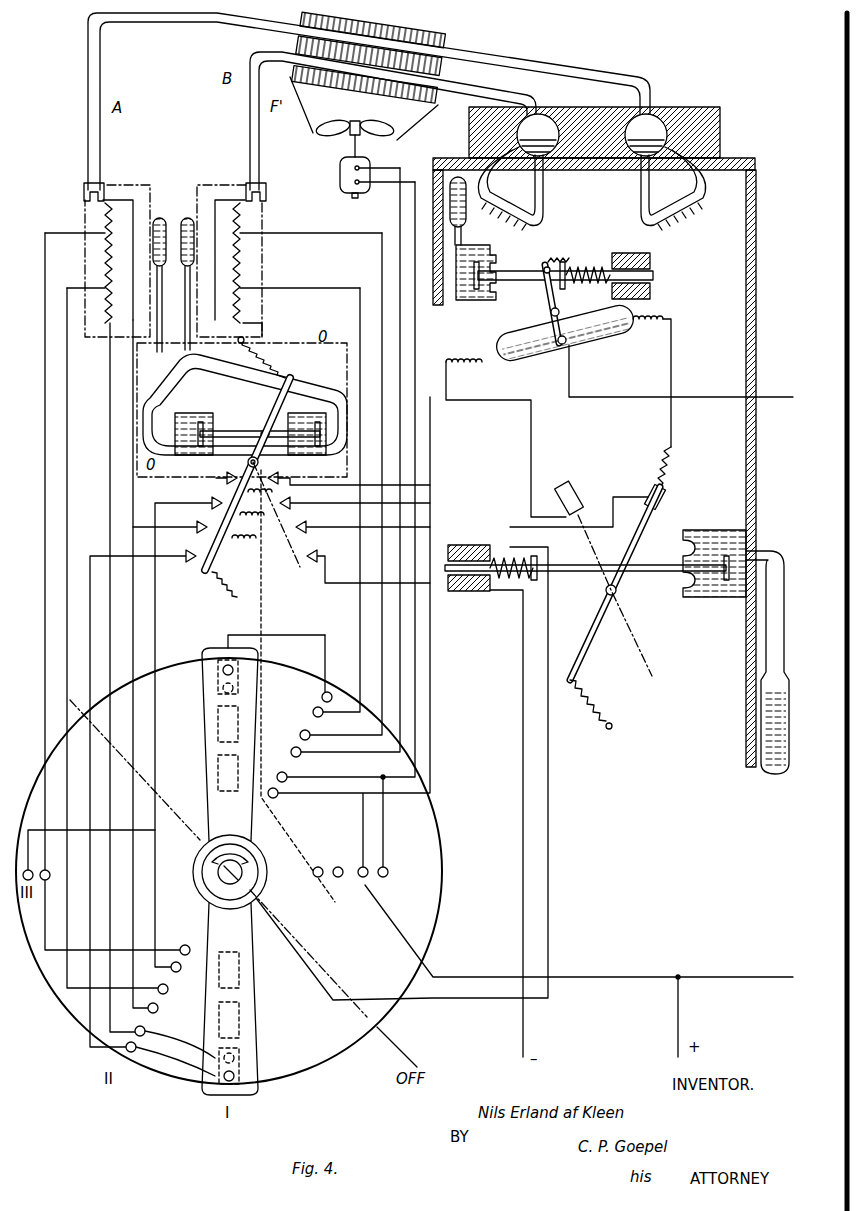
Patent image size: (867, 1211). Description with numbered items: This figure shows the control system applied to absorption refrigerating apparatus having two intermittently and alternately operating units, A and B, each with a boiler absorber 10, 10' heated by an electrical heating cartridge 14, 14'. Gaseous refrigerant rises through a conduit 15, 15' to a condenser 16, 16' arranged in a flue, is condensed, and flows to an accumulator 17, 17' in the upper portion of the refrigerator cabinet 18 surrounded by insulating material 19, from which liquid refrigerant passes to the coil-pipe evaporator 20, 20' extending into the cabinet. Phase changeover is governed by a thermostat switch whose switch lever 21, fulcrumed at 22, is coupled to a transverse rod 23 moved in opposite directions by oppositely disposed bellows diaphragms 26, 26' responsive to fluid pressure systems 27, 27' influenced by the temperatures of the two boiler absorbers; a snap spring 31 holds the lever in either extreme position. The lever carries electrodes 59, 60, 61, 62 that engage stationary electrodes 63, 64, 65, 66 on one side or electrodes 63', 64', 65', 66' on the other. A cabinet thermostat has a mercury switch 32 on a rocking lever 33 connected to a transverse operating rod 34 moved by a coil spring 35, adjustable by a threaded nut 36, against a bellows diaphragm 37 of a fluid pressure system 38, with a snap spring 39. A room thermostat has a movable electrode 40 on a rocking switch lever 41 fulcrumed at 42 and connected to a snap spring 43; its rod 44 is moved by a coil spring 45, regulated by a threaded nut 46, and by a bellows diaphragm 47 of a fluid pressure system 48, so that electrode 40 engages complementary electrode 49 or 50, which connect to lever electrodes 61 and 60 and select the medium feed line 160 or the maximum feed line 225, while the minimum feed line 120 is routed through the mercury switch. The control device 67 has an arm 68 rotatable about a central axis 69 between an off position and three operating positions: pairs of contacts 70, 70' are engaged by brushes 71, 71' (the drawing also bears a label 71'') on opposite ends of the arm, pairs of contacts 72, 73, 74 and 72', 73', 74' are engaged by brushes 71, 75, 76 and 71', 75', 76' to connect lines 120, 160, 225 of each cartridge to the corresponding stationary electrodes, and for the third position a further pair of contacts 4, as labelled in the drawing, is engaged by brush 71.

The contact 4 is at (38, 868).
The boiler absorber 10 is at (117, 244).
The boiler absorber 10' is at (229, 244).
The electrical heating cartridge 14 is at (118, 261).
The heat cartridge 14' is at (230, 261).
The conduit 15 is at (349, 107).
The conduit 15' is at (374, 126).
The condenser 16 is at (367, 73).
The condenser 16' is at (355, 117).
The accumulator 17 is at (359, 166).
The accumulator 17' is at (538, 135).
The refrigerator cabinet 18 is at (746, 242).
The insulating material 19 is at (585, 108).
The evaporator 20 is at (673, 188).
The evaporator 20' is at (510, 188).
The switch lever 21 is at (272, 408).
The fulcrum 22 is at (248, 460).
The transverse rod 23 is at (261, 431).
The bellows diaphragm 26 is at (245, 416).
The bellows diaphragm 26' is at (194, 420).
The fluid pressure system 27 is at (162, 269).
The fluid pressure system 27' is at (187, 274).
The snap spring 31 is at (276, 368).
The mercury switch 32 is at (550, 356).
The rocking lever 33 is at (557, 292).
The transverse operating rod 34 is at (522, 265).
The coil spring 35 is at (586, 268).
The threaded nut 36 is at (645, 256).
The bellows diaphragm 37 is at (492, 252).
The fluid pressure system 38 is at (466, 212).
The snap spring 39 is at (565, 240).
The movable electrode 40 is at (666, 497).
The rocking switch lever 41 is at (632, 540).
The fulcrum 42 is at (616, 593).
The snap spring 43 is at (596, 700).
The transverse operating rod 44 is at (672, 572).
The coil spring 45 is at (505, 580).
The threaded nut 46 is at (466, 592).
The bellows diaphragm 47 is at (716, 532).
The fluid pressure system 48 is at (770, 775).
The complementary electrode 49 is at (665, 472).
The complementary electrode 50 is at (566, 490).
The switch lever electrode 59 is at (258, 500).
The switch lever electrode 60 is at (250, 524).
The switch lever electrode 61 is at (240, 549).
The switch lever electrode 62 is at (216, 584).
The complementary electrode 63 is at (215, 473).
The complementary electrode 63' is at (349, 470).
The complementary electrode 64 is at (188, 723).
The complementary electrode 64' is at (355, 494).
The complementary electrode 65 is at (170, 519).
The complementary electrode 65' is at (363, 518).
The complementary electrode 66 is at (143, 788).
The complementary electrode 66' is at (364, 568).
The control device 67 is at (229, 871).
The arm 68 is at (240, 930).
The central axis 69 is at (248, 872).
The pair of contacts 70 is at (207, 1054).
The pair of contacts 70' is at (202, 682).
The circuit-closing brush 71 is at (252, 1091).
The circuit-closing brush 71' is at (293, 765).
The contact 71'' is at (330, 857).
The pair of contacts 72 is at (170, 1046).
The pair of contacts 72' is at (310, 698).
The pair of contacts 73 is at (167, 1001).
The pair of contacts 73' is at (293, 737).
The pair of contacts 74 is at (185, 965).
The pair of contacts 74' is at (279, 777).
The circuit-making brush 75 is at (254, 1017).
The circuit-making brush 75' is at (204, 724).
The circuit-making brush 76 is at (250, 969).
The circuit-making brush 76' is at (204, 773).
The feed line 120 is at (106, 330).
The feed line 160 is at (204, 278).
The feed line 225 is at (213, 224).